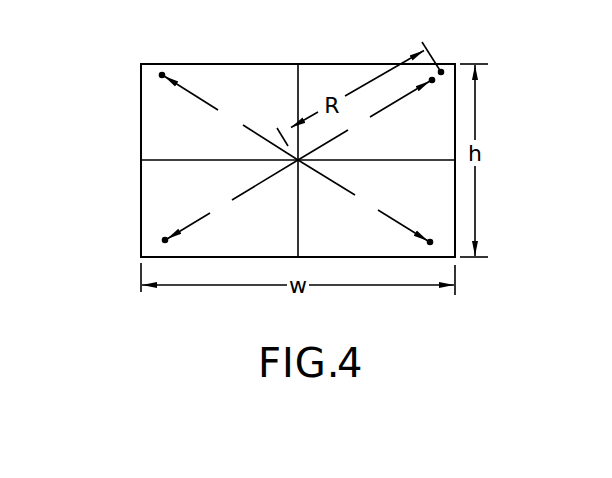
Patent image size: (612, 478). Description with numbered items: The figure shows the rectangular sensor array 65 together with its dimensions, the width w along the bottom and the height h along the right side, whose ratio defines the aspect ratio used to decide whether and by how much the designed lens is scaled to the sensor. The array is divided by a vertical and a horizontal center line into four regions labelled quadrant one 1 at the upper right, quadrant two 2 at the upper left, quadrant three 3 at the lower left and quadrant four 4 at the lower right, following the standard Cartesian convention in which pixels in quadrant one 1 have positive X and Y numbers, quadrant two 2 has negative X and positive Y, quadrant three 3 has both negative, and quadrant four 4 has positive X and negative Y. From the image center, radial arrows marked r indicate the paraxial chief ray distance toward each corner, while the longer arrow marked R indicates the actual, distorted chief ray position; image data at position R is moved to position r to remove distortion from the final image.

The display screen area divided into quadrants 65 is at (141, 113).
The quadrant one 1 is at (366, 119).
The quadrant two 2 is at (224, 117).
The quadrant three 3 is at (224, 201).
The quadrant four 4 is at (365, 202).